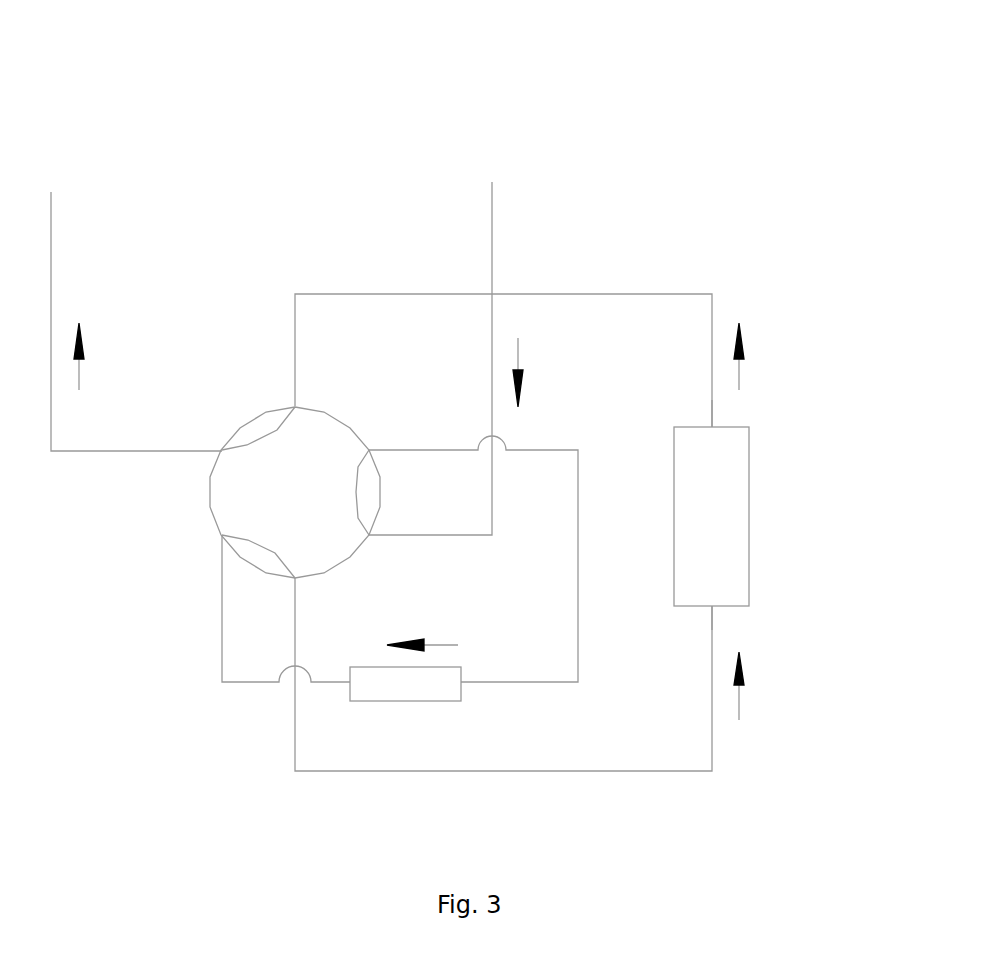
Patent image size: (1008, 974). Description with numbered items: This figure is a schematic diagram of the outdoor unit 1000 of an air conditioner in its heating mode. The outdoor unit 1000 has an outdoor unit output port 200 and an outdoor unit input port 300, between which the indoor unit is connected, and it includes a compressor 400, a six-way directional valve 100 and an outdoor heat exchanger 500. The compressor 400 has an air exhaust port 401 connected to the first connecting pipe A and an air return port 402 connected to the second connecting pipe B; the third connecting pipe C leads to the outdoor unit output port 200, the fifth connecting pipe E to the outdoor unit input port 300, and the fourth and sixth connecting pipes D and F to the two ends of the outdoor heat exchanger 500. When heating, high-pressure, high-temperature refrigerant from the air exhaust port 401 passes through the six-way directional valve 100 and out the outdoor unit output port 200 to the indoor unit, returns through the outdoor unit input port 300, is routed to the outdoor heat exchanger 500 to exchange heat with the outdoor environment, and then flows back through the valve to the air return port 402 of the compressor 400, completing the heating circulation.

The outdoor unit 1000 is at (405, 57).
The six-way directional valve 100 is at (257, 513).
The outdoor unit output port 200 is at (56, 282).
The outdoor unit input port 300 is at (499, 267).
The compressor 400 is at (702, 552).
The air exhaust port 401 is at (715, 427).
The air return port 402 is at (722, 605).
The outdoor heat exchanger 500 is at (410, 688).